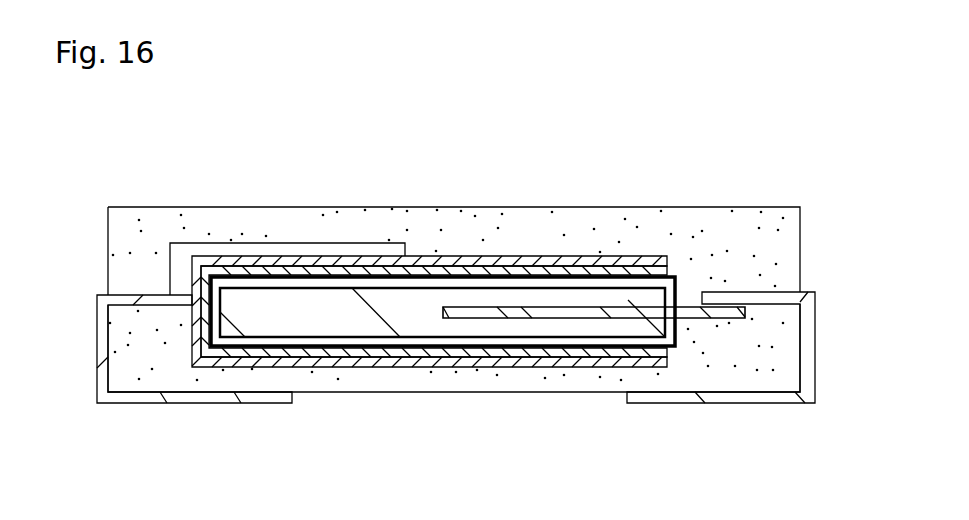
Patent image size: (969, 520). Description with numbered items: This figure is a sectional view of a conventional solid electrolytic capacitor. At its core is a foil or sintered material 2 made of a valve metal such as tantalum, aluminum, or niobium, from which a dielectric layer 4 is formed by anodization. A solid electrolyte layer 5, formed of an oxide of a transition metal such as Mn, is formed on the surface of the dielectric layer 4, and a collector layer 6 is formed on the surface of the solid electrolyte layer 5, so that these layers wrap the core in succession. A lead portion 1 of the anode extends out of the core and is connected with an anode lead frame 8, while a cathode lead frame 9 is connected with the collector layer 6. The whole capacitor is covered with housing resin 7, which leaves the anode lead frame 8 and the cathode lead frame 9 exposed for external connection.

The lead portion 1 is at (682, 310).
The foil or sintered material 2 is at (305, 298).
The dielectric layer 4 is at (407, 290).
The solid electrolyte layer 5 is at (487, 272).
The collector layer 6 is at (585, 257).
The housing resin 7 is at (400, 388).
The anode lead frame 8 is at (680, 393).
The cathode lead frame 9 is at (187, 395).